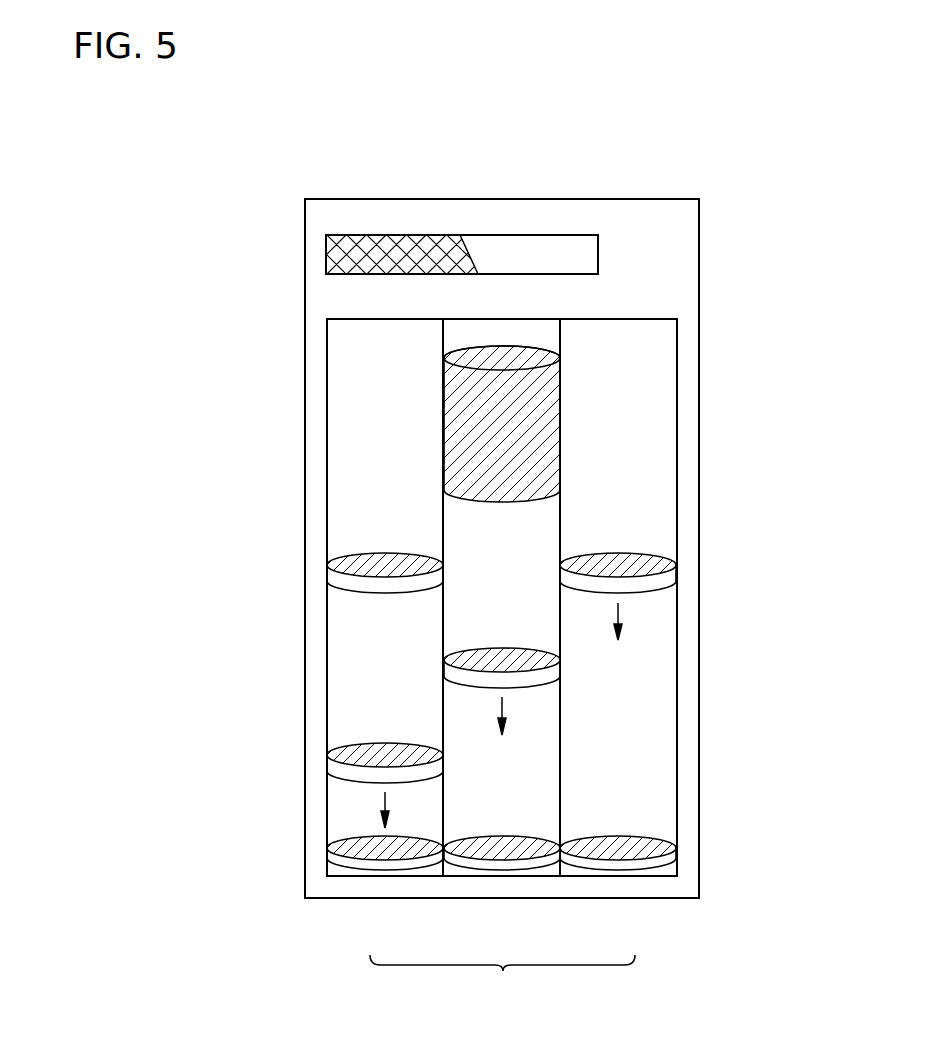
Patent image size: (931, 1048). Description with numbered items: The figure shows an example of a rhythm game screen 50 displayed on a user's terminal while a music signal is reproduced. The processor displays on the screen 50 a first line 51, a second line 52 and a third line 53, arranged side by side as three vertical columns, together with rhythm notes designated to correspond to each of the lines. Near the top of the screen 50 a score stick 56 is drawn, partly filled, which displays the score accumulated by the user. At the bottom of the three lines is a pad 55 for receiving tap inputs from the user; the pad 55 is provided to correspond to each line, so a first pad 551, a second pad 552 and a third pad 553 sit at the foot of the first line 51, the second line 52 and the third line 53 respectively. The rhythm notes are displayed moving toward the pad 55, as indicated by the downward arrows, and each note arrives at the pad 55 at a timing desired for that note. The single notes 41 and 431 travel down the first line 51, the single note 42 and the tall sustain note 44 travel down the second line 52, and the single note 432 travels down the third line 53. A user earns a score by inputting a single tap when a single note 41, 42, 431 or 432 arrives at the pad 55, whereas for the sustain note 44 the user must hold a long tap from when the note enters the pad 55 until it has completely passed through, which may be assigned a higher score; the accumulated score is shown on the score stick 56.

The screen 50 is at (618, 199).
The score stick 56 is at (504, 235).
The first line 51 is at (335, 377).
The second line 52 is at (455, 334).
The third line 53 is at (665, 338).
The sustain note 44 is at (552, 421).
The single note 431 is at (335, 578).
The single note 432 is at (665, 580).
The single note 42 is at (552, 672).
The single note 41 is at (335, 767).
The first pad 551 is at (384, 868).
The second pad 552 is at (502, 868).
The third pad 553 is at (619, 868).
The pad 55 is at (502, 979).